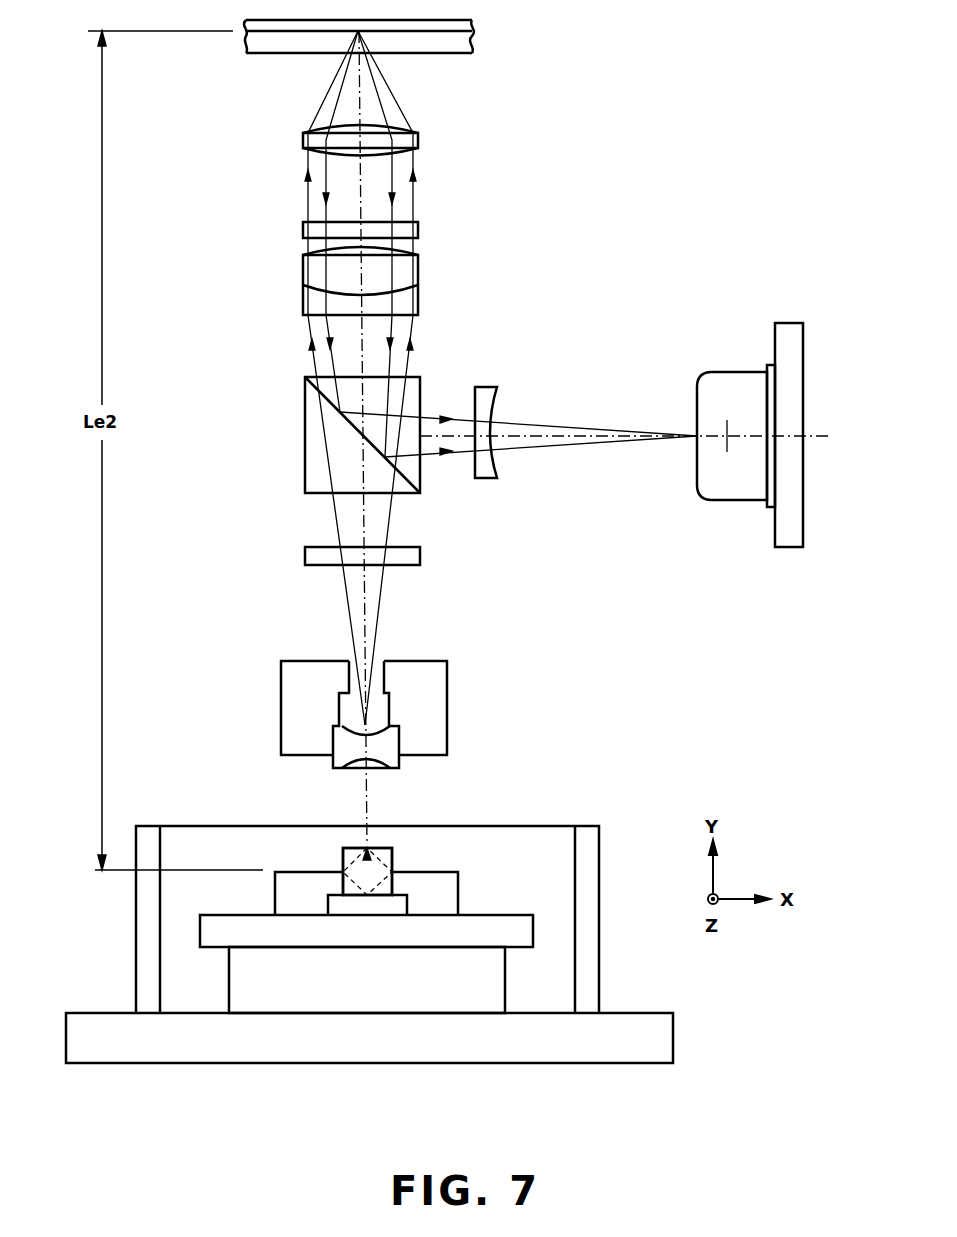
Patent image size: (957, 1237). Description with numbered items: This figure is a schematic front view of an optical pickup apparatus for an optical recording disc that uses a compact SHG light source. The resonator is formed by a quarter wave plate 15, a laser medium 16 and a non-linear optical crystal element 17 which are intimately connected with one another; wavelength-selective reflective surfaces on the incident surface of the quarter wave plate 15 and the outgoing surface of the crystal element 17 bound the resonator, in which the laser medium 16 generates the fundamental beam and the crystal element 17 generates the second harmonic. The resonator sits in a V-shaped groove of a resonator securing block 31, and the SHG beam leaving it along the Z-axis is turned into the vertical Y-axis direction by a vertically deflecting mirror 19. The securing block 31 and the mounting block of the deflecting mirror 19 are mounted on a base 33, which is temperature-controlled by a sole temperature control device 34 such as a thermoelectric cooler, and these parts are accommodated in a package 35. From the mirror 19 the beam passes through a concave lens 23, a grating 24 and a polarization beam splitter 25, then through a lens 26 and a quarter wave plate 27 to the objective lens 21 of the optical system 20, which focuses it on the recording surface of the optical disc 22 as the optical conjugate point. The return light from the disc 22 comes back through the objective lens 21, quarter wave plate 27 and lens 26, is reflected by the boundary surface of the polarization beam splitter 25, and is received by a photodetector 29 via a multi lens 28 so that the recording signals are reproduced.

The quarter wave plate 15 is at (345, 865).
The laser medium 16 is at (367, 871).
The non-linear optical crystal element 17 is at (367, 871).
The vertically deflecting mirror 19 is at (383, 850).
The optical system 20 is at (588, 248).
The objective lens 21 is at (305, 143).
The optical disc 22 is at (462, 41).
The concave lens 23 is at (347, 707).
The grating 24 is at (310, 556).
The polarization beam splitter 25 is at (310, 443).
The lens 26 is at (305, 272).
The quarter wave plate 27 is at (305, 228).
The multi lens 28 is at (482, 393).
The photodetector 29 is at (722, 390).
The resonator securing block 31 is at (443, 885).
The base 33 is at (522, 930).
The temperature control device 34 is at (495, 993).
The package 35 is at (583, 847).